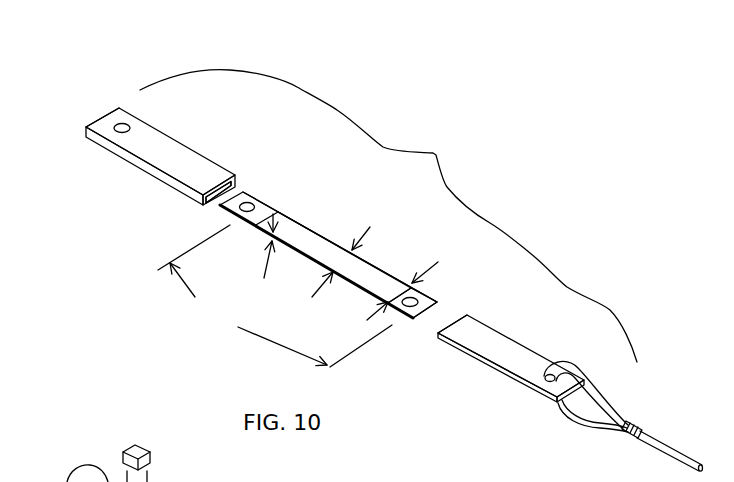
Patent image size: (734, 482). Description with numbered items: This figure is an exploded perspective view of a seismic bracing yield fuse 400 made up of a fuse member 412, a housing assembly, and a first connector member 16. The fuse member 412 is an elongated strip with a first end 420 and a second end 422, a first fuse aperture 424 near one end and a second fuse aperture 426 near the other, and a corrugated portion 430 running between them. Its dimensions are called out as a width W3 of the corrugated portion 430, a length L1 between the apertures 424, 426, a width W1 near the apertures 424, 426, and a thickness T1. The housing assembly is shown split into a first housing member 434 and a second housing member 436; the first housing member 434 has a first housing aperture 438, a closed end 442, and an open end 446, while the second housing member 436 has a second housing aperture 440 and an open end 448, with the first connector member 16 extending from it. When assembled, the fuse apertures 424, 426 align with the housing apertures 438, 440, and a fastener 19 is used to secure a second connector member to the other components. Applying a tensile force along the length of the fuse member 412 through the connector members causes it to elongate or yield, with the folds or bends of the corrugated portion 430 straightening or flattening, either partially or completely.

The seismic bracing yield fuse 400 is at (388, 216).
The first housing member 434 is at (143, 170).
The closed end 442 is at (92, 120).
The first housing aperture 438 is at (118, 131).
The open end 446 is at (228, 186).
The first end 420 is at (262, 200).
The first fuse aperture 424 is at (247, 200).
The corrugated portion 430 is at (316, 234).
The fuse member 412 is at (394, 252).
The second fuse aperture 426 is at (424, 295).
The second end 422 is at (436, 301).
The width near the apertures W1 is at (418, 276).
The width of the corrugated portion W3 is at (328, 280).
The thickness T1 is at (262, 258).
The length between the apertures L1 is at (275, 296).
The second housing member 436 is at (512, 386).
The open end 448 is at (443, 360).
The second housing aperture 440 is at (544, 375).
The first connector member 16 is at (660, 443).
The fastener 19 is at (151, 473).